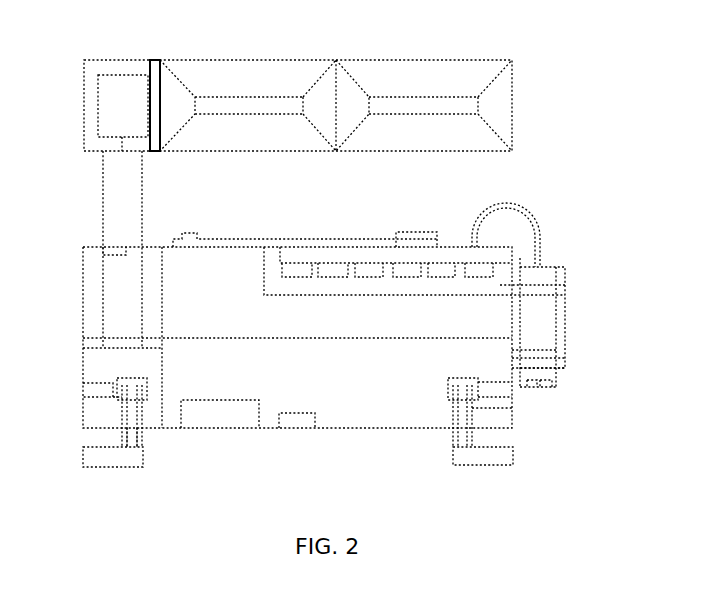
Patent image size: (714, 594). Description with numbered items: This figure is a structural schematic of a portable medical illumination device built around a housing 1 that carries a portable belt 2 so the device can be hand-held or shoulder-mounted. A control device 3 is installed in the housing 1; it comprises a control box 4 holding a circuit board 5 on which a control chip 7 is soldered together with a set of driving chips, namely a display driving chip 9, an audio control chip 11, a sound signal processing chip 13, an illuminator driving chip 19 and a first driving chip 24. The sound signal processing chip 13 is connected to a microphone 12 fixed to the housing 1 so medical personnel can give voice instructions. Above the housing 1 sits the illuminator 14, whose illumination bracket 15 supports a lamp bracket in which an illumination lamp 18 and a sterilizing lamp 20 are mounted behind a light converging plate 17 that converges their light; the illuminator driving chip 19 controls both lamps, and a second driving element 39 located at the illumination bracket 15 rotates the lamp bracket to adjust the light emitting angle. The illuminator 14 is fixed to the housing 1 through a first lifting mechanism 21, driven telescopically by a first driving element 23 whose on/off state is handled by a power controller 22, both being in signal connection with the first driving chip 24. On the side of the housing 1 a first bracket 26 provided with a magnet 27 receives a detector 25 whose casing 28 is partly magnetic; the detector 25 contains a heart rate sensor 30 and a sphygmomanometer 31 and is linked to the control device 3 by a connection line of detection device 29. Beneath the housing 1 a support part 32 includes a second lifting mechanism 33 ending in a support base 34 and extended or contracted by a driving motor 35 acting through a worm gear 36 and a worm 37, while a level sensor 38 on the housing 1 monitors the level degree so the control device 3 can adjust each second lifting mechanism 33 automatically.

The housing 1 is at (378, 418).
The portable belt 2 is at (214, 240).
The control device 3 is at (500, 300).
The control box 4 is at (540, 290).
The circuit board 5 is at (500, 205).
The control chip 7 is at (292, 270).
The display driving chip 9 is at (332, 270).
The audio control chip 11 is at (367, 268).
The microphone 12 is at (118, 252).
The sound signal processing chip 13 is at (404, 269).
The illuminator 14 is at (512, 100).
The illumination bracket 15 is at (101, 60).
The light converging plate 17 is at (410, 78).
The illumination lamp 18 is at (249, 100).
The illuminator driving chip 19 is at (447, 264).
The sterilizing lamp 20 is at (455, 100).
The first lifting mechanism 21 is at (88, 360).
The power controller 22 is at (227, 418).
The first driving element 23 is at (120, 108).
The first driving chip 24 is at (490, 265).
The detector 25 is at (555, 380).
The first bracket 26 is at (565, 335).
The magnet 27 is at (565, 357).
The casing 28 is at (548, 277).
The connection line of detection device 29 is at (538, 262).
The heart rate sensor 30 is at (548, 384).
The sphygmomanometer 31 is at (528, 385).
The support part 32 is at (480, 465).
The second lifting mechanism 33 is at (128, 433).
The support base 34 is at (108, 467).
The driving motor 35 is at (86, 390).
The worm gear 36 is at (118, 398).
The worm 37 is at (137, 448).
The level sensor 38 is at (298, 420).
The second driving element 39 is at (155, 75).